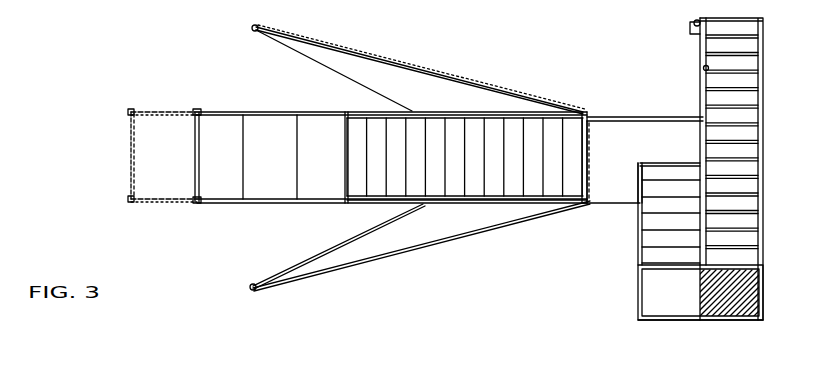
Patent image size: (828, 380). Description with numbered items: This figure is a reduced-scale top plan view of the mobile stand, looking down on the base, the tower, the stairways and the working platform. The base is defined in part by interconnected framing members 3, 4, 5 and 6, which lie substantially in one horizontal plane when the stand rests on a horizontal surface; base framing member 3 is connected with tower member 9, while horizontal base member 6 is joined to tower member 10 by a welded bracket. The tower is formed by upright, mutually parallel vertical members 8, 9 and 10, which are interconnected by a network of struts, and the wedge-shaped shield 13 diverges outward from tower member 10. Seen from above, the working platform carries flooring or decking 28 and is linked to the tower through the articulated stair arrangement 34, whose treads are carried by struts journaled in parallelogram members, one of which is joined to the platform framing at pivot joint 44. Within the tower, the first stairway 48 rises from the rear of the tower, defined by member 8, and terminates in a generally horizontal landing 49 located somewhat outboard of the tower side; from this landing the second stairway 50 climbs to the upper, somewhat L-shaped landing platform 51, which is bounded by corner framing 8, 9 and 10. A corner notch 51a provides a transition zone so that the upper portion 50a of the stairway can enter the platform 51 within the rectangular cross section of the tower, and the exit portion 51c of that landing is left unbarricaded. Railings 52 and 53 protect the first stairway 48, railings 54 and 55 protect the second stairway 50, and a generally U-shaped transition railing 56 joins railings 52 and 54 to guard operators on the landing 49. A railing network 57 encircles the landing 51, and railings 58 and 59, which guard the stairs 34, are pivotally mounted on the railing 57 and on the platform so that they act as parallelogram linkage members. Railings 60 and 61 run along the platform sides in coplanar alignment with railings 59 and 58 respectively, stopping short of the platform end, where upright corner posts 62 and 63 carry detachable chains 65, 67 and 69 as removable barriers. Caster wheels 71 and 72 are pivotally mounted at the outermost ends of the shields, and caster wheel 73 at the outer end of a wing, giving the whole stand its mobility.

The framing member 3 is at (430, 66).
The framing member 4 is at (382, 92).
The framing member 5 is at (370, 230).
The framing member 6 is at (355, 270).
The vertical member 8 is at (702, 118).
The vertical member 9 is at (583, 110).
The vertical member 10 is at (587, 205).
The shield 13 is at (556, 104).
The decking 28 is at (214, 112).
The articulated stair arrangement 34 is at (465, 196).
The pivot joint 44 is at (356, 112).
The first stairway 48 is at (760, 103).
The landing 49 is at (750, 299).
The second stairway 50 is at (648, 222).
The upper portion of the stairway 50a is at (652, 172).
The upper landing platform 51 is at (648, 124).
The corner notch 51a is at (660, 162).
The exit portion 51c is at (590, 138).
The railing 52 is at (763, 185).
The railing 53 is at (703, 67).
The railing 54 is at (648, 250).
The railing 55 is at (700, 245).
The transition railing 56 is at (728, 321).
The railing network 57 is at (612, 117).
The railing 58 is at (433, 203).
The railing 59 is at (436, 117).
The railing 60 is at (240, 112).
The railing 61 is at (250, 204).
The corner post 62 is at (120, 110).
The corner post 63 is at (131, 203).
The detachable chain 65 is at (178, 112).
The detachable chain 67 is at (131, 155).
The detachable chain 69 is at (173, 204).
The caster wheel 71 is at (257, 25).
The caster wheel 72 is at (255, 291).
The caster wheel 73 is at (692, 30).